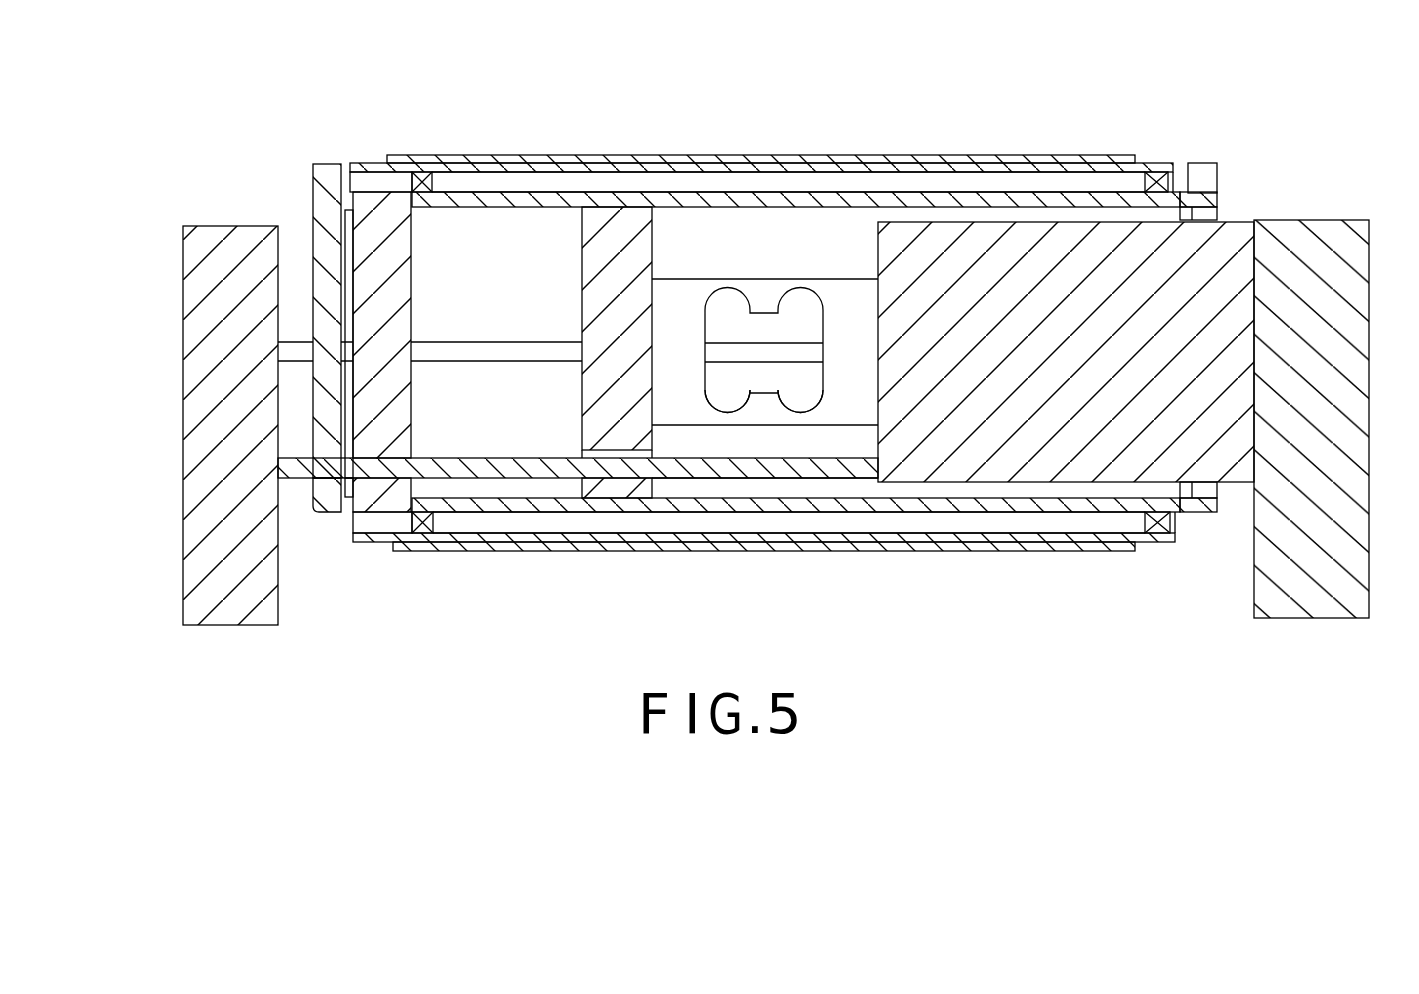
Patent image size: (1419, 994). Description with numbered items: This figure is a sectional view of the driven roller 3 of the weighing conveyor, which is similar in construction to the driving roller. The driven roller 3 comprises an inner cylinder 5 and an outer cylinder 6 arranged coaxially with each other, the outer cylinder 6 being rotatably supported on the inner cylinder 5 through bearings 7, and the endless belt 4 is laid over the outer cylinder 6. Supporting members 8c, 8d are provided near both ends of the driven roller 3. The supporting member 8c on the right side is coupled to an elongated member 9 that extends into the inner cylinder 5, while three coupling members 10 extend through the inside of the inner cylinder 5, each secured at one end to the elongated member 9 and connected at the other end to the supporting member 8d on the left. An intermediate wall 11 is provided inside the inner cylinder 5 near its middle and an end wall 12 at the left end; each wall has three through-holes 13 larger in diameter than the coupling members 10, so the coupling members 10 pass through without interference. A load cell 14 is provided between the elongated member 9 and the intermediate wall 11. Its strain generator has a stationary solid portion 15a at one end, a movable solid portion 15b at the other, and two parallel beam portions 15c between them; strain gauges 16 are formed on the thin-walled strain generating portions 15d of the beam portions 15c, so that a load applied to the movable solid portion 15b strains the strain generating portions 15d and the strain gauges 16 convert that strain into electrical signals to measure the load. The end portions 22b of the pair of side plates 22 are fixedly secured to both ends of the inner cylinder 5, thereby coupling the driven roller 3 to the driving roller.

The driven roller 3 is at (747, 83).
The endless belt 4 is at (993, 158).
The inner cylinder 5 is at (545, 193).
The outer cylinder 6 is at (1153, 165).
The bearings 7 is at (1165, 162).
The supporting member 8c is at (1352, 393).
The supporting member 8d is at (205, 450).
The elongated member 9 is at (1240, 236).
The coupling members 10 is at (448, 467).
The intermediate wall 11 is at (602, 297).
The end wall 12 is at (400, 282).
The through-holes 13 is at (603, 567).
The load cell 14 is at (792, 227).
The stationary solid portion 15a is at (856, 308).
The movable solid portion 15b is at (678, 312).
The beam portions 15c is at (764, 290).
The strain generating portions 15d is at (725, 417).
The strain gauges 16 is at (803, 417).
The side plates 22 is at (1203, 498).
The end portions 22b is at (327, 220).